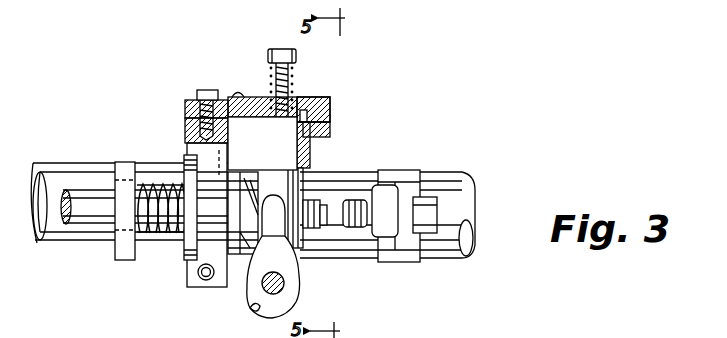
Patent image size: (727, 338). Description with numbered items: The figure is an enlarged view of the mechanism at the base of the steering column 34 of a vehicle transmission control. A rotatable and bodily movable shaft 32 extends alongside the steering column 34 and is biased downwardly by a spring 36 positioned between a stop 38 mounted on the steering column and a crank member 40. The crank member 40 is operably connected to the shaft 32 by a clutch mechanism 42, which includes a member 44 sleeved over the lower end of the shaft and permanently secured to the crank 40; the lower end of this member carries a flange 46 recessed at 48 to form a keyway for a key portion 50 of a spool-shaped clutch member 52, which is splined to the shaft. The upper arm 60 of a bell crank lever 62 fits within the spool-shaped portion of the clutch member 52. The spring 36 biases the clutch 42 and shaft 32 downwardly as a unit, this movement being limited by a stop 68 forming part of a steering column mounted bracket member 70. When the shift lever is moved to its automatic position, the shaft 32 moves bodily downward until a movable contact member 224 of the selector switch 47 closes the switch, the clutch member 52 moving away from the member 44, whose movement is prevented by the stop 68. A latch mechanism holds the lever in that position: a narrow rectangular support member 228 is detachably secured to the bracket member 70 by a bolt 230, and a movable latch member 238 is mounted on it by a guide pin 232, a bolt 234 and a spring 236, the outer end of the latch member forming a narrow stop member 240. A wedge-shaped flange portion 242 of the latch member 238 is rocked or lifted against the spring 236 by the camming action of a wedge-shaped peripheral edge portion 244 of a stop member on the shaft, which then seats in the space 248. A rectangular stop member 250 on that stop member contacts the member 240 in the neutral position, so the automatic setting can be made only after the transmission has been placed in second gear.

The shaft 32 is at (72, 195).
The steering column 34 is at (462, 177).
The spring 36 is at (163, 238).
The stop 38 is at (122, 162).
The crank member 40 is at (185, 160).
The clutch mechanism 42 is at (242, 262).
The clutch member 44 is at (190, 262).
The flange 46 is at (238, 157).
The selector switch 47 is at (345, 205).
The recess 48 is at (254, 176).
The key portion 50 is at (262, 190).
The clutch member 52 is at (245, 275).
The upper arm 60 is at (298, 276).
The bell crank lever 62 is at (298, 292).
The stop 68 is at (226, 172).
The bracket member 70 is at (186, 122).
The movable contact member 224 is at (336, 208).
The support member 228 is at (186, 107).
The bolt 230 is at (198, 92).
The guide pin 232 is at (237, 93).
The bolt 234 is at (270, 70).
The spring 236 is at (270, 54).
The movable latch member 238 is at (300, 97).
The stop member 240 is at (330, 102).
The wedge-shaped flange portion 242 is at (313, 98).
The wedge-shaped peripheral edge portion 244 is at (297, 131).
The space 248 is at (330, 118).
The rectangular stop member 250 is at (316, 147).